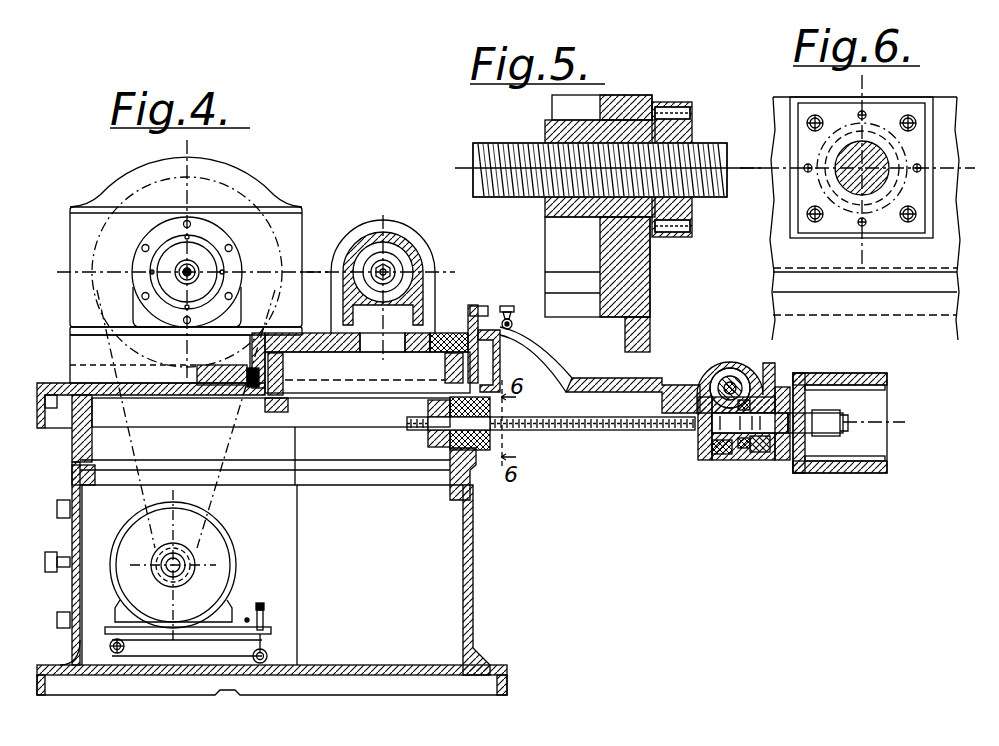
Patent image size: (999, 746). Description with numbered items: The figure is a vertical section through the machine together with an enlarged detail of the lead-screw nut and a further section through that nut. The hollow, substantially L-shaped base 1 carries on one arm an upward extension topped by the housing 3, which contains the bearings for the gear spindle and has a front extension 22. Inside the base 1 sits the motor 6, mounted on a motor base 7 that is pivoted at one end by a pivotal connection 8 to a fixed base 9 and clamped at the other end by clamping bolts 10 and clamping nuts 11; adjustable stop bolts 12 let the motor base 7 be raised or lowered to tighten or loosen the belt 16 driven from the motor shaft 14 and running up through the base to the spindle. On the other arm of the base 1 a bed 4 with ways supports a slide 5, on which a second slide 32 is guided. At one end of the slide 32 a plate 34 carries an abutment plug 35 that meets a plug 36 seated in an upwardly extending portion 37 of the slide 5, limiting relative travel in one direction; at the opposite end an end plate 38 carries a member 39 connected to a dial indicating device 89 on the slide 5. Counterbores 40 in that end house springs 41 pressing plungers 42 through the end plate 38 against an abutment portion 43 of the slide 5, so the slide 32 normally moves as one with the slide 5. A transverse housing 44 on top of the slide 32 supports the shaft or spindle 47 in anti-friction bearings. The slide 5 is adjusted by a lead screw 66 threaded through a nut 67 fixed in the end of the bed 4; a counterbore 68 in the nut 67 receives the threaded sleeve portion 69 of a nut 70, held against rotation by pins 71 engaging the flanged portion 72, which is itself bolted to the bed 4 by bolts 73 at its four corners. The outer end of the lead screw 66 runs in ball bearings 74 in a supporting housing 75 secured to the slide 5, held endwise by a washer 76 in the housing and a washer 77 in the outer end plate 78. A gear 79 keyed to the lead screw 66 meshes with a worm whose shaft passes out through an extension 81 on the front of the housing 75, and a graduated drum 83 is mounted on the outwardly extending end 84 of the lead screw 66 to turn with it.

In FIG. 4, the base 1 is at (475, 560).
In FIG. 4, the housing 3 is at (283, 225).
In FIG. 4, the bed 4 is at (72, 446).
In FIG. 4, the slide 5 is at (578, 378).
In FIG. 4, the motor 6 is at (215, 547).
In FIG. 4, the motor base 7 is at (145, 634).
In FIG. 4, the pivotal connection 8 is at (110, 646).
In FIG. 4, the fixed base 9 is at (180, 660).
In FIG. 4, the clamping bolts 10 is at (270, 650).
In FIG. 4, the clamping nuts 11 is at (264, 618).
In FIG. 4, the stop bolts 12 is at (248, 618).
In FIG. 4, the motor shaft 14 is at (165, 572).
In FIG. 4, the belt 16 is at (232, 447).
In FIG. 4, the extension 22 is at (222, 237).
In FIG. 4, the slide 32 is at (318, 342).
In FIG. 4, the plate 34 is at (252, 345).
In FIG. 4, the abutment plug 35 is at (252, 390).
In FIG. 4, the plug 36 is at (197, 370).
In FIG. 4, the upwardly extending portion 37 is at (203, 386).
In FIG. 4, the end plate 38 is at (500, 362).
In FIG. 4, the member 39 is at (476, 310).
In FIG. 4, the counterbores 40 is at (446, 332).
In FIG. 4, the springs 41 is at (438, 353).
In FIG. 4, the plungers 42 is at (514, 328).
In FIG. 4, the abutment portion 43 is at (545, 357).
In FIG. 4, the housing 44 is at (425, 252).
In FIG. 4, the shaft or spindle 47 is at (372, 255).
In FIG. 4, the lead screw 66 is at (582, 432).
In FIG. 5, the lead screw 66 is at (610, 170).
In FIG. 4, the nut 67 is at (430, 440).
In FIG. 5, the nut 67 is at (548, 212).
In FIG. 5, the counterbore 68 is at (618, 118).
In FIG. 5, the sleeve portion 69 is at (676, 107).
In FIG. 4, the nut 70 is at (480, 465).
In FIG. 5, the nut 70 is at (692, 130).
In FIG. 5, the pins 71 is at (692, 108).
In FIG. 6, the pins 71 is at (865, 113).
In FIG. 5, the flanged portion 72 is at (668, 103).
In FIG. 6, the flanged portion 72 is at (920, 143).
In FIG. 6, the bolts 73 is at (912, 118).
In FIG. 4, the ball bearing 74 is at (700, 452).
In FIG. 4, the supporting housing 75 is at (735, 462).
In FIG. 4, the washer 76 is at (700, 440).
In FIG. 4, the washer 77 is at (778, 460).
In FIG. 4, the outer end plate 78 is at (782, 386).
In FIG. 4, the gear 79 is at (716, 458).
In FIG. 4, the extension 81 is at (722, 368).
In FIG. 4, the drum 83 is at (842, 378).
In FIG. 4, the outwardly extending end 84 is at (832, 408).
In FIG. 4, the dial indicating device 89 is at (511, 312).